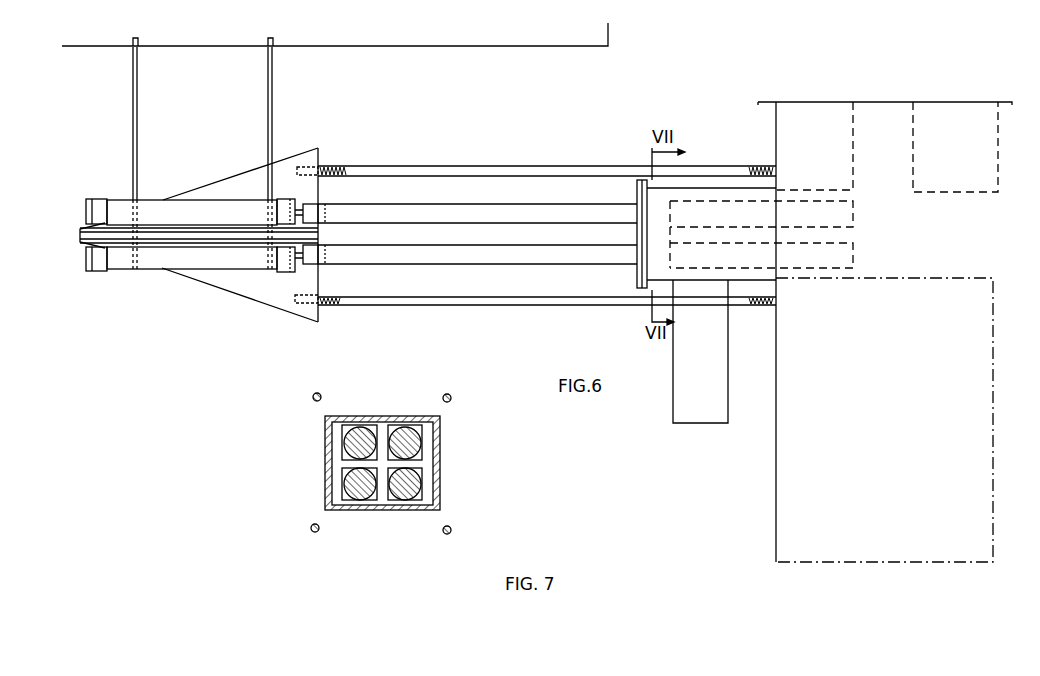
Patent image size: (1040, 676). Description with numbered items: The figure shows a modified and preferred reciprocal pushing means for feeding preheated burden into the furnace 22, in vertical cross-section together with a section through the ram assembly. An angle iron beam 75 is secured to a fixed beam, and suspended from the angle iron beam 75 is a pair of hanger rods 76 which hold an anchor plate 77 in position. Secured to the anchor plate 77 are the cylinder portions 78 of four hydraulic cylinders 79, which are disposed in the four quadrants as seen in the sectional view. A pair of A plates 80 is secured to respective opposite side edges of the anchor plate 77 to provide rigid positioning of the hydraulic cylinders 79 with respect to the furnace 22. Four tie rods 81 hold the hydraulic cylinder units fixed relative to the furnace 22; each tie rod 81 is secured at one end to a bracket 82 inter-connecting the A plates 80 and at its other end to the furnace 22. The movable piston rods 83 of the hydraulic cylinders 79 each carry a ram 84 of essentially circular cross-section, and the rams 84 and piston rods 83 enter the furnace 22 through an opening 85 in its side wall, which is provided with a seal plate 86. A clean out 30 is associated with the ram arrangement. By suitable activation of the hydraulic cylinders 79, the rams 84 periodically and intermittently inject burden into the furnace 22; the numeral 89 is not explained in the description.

In FIG. 6, the furnace 22 is at (779, 488).
In FIG. 6, the clean out 30 is at (675, 416).
In FIG. 6, the angle iron beam 75 is at (578, 47).
In FIG. 6, the hanger rods 76 is at (137, 110).
In FIG. 6, the anchor plate 77 is at (82, 237).
In FIG. 6, the cylinder portions 78 is at (87, 213).
In FIG. 6, the hydraulic cylinders 79 is at (179, 207).
In FIG. 7, the hydraulic cylinders 79 is at (343, 500).
In FIG. 6, the A plates 80 is at (289, 164).
In FIG. 6, the tie rods 81 is at (500, 174).
In FIG. 7, the tie rods 81 is at (451, 398).
In FIG. 6, the bracket 82 is at (325, 150).
In FIG. 6, the piston rods 83 is at (442, 208).
In FIG. 7, the piston rods 83 is at (398, 433).
In FIG. 6, the ram 84 is at (767, 204).
In FIG. 7, the ram 84 is at (348, 448).
In FIG. 6, the opening 85 is at (708, 188).
In FIG. 6, the seal plate 86 is at (640, 273).
In FIG. 7, the bores 89 is at (347, 433).